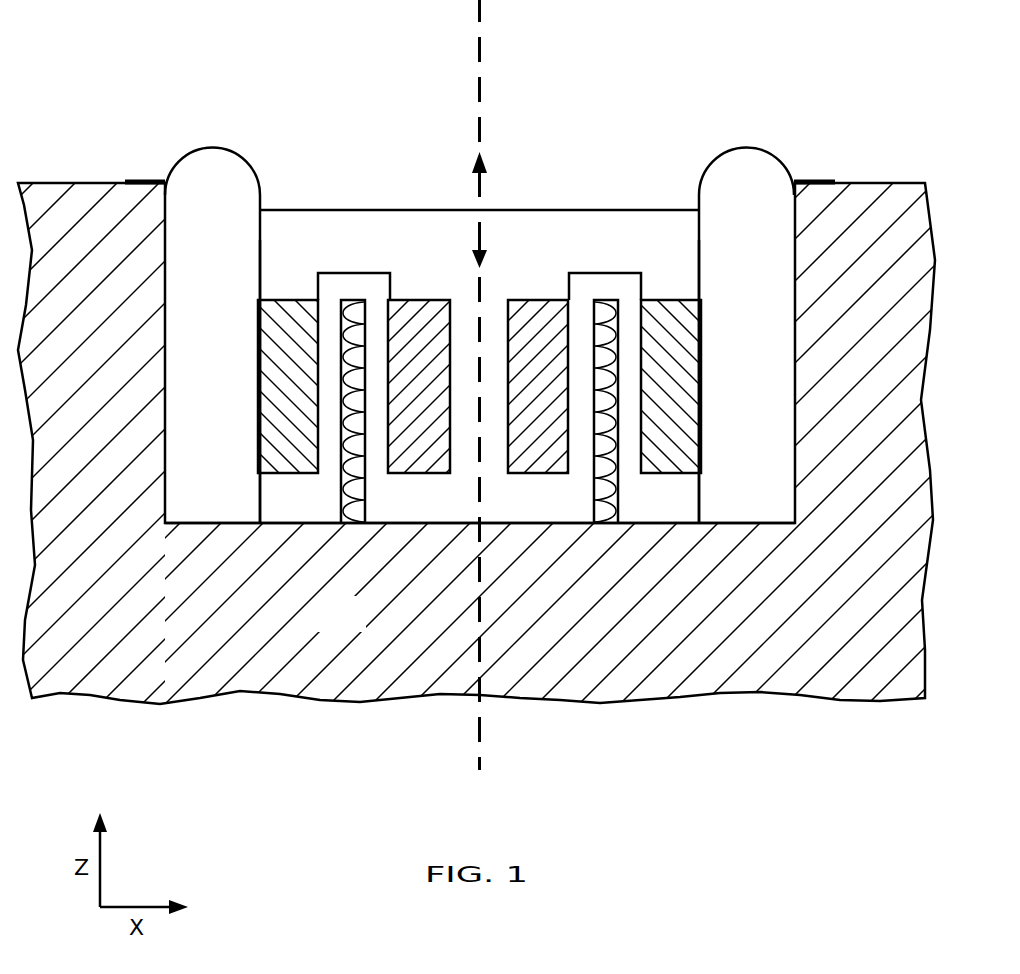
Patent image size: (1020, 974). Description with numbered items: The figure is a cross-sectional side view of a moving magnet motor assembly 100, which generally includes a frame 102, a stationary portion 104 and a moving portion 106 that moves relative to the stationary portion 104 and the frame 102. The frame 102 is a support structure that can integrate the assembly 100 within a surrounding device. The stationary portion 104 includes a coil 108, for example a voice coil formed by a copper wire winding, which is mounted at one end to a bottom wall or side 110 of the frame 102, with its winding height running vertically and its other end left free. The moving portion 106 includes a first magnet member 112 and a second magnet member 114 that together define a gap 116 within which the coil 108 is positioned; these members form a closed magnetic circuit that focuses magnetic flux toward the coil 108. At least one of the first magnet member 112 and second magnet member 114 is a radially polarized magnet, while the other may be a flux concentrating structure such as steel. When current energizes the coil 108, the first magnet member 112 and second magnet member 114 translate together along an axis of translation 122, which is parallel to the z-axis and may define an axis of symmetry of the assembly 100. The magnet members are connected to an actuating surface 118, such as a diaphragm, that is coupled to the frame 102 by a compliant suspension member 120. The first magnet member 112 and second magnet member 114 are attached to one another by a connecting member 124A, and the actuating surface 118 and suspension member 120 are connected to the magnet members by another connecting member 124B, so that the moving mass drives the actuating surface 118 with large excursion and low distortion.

The assembly 100 is at (642, 80).
The frame 102 is at (358, 628).
The stationary portion 104 is at (628, 508).
The moving portion 106 is at (712, 236).
The coil 108 is at (341, 497).
The bottom wall or side 110 is at (205, 523).
The first magnet member 112 is at (422, 300).
The second magnet member 114 is at (258, 378).
The gap 116 is at (383, 484).
The actuating surface 118 is at (338, 210).
The suspension member 120 is at (212, 147).
The axis of translation 122 is at (483, 4).
The connecting member 124A is at (355, 273).
The connecting member 124B is at (258, 248).